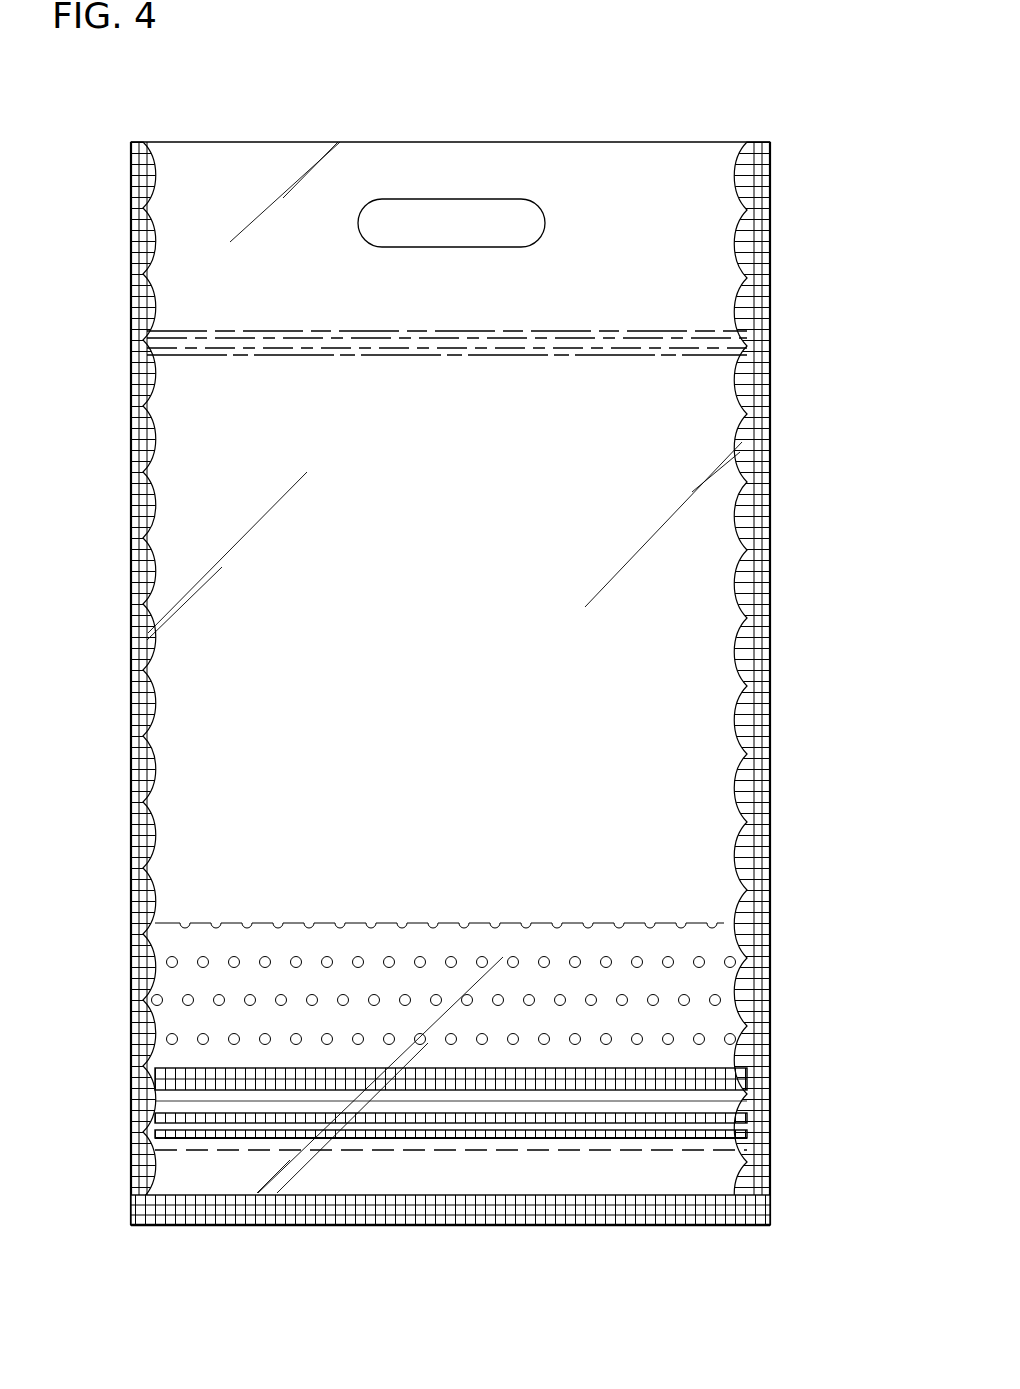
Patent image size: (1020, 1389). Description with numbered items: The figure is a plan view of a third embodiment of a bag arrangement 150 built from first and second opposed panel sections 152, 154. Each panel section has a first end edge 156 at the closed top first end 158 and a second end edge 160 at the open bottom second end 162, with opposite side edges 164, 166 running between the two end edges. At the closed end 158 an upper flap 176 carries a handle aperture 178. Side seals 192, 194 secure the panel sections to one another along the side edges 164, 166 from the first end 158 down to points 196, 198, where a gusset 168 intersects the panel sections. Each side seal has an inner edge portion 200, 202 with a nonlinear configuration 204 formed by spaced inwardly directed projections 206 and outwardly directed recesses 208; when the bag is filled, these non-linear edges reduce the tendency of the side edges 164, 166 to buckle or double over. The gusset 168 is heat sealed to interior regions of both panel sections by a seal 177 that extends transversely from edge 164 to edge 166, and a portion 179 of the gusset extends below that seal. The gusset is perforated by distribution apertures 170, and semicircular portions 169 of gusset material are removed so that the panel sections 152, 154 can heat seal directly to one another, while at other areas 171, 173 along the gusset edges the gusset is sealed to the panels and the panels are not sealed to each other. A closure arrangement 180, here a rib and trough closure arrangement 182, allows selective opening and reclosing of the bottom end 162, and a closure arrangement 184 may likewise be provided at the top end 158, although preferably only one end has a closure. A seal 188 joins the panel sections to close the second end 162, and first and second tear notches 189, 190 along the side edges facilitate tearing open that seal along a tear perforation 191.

The bag arrangement 150 is at (365, 83).
The first panel section 152 is at (165, 414).
The second panel section 154 is at (163, 482).
The first end edge 156 is at (652, 142).
The first end 158 is at (555, 107).
The second end edge 160 is at (370, 1226).
The second end 162 is at (453, 1244).
The side edge 164 is at (150, 677).
The side edge 166 is at (770, 673).
The gusset 168 is at (148, 1005).
The semicircular portions 169 is at (148, 953).
The distribution apertures 170 is at (312, 995).
The area along gusset edge 171 is at (148, 1018).
The area along gusset edge 173 is at (760, 1025).
The upper flap 176 is at (720, 217).
The seal 177 is at (725, 1083).
The handle aperture 178 is at (432, 199).
The portion of gusset 179 is at (735, 1098).
The closure arrangement 180 is at (735, 1110).
The rib and trough closure arrangement 182 is at (150, 1110).
The closure arrangement 184 is at (657, 357).
The seal 188 is at (596, 1222).
The first tear notch 189 is at (150, 1150).
The second tear notch 190 is at (765, 1152).
The tear perforation 191 is at (682, 1152).
The first seal 192 is at (150, 806).
The second seal 194 is at (765, 773).
The point 196 is at (148, 920).
The point 198 is at (765, 935).
The inner edge portion 200 is at (180, 697).
The inner edge portion 202 is at (720, 681).
The nonlinear configuration 204 is at (180, 771).
The inwardly directed projections 206 is at (155, 512).
The outwardly directed recesses 208 is at (147, 562).